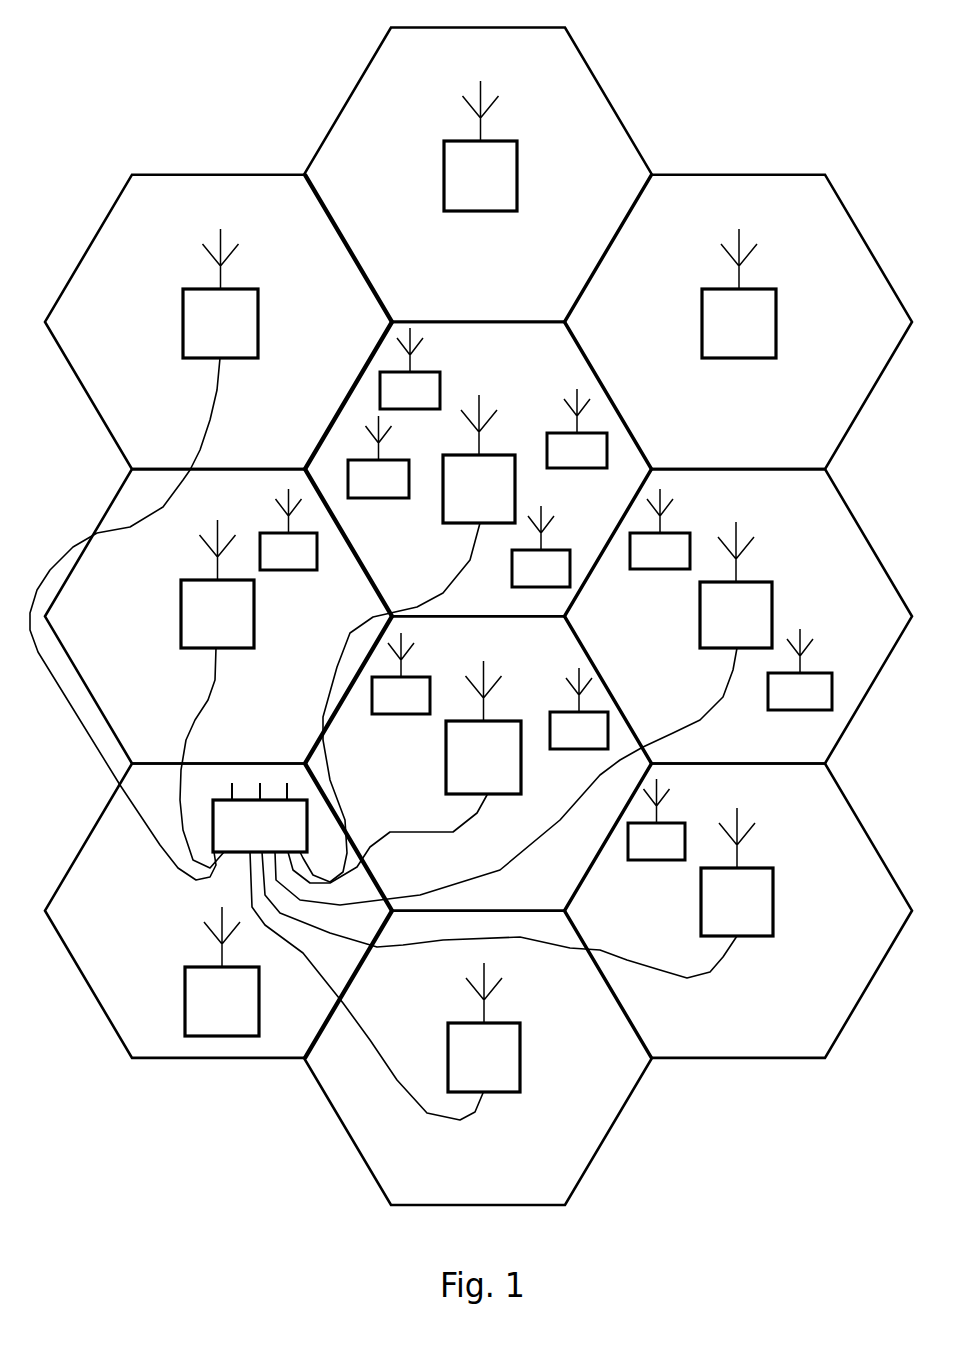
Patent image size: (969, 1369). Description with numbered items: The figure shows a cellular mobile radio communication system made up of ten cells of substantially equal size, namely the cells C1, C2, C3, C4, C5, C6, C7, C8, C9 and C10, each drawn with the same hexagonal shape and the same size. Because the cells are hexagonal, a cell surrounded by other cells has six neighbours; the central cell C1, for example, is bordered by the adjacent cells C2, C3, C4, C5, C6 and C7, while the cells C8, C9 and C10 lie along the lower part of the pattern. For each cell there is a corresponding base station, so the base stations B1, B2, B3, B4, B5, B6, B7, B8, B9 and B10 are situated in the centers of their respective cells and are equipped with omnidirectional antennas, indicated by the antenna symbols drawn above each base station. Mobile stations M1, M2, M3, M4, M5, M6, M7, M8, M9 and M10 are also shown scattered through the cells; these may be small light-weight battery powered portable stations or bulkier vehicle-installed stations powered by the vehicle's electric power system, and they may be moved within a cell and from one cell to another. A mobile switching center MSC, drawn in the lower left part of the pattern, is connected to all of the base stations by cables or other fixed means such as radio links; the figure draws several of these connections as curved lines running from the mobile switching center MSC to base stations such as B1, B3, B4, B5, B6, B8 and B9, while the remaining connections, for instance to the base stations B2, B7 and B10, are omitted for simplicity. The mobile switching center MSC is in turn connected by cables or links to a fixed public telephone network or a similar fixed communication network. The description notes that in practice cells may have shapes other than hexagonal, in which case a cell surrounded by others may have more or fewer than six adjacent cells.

The cell C1 is at (428, 585).
The cell C2 is at (699, 448).
The cell C3 is at (687, 727).
The cell C4 is at (444, 890).
The cell C5 is at (177, 735).
The cell C6 is at (178, 448).
The cell C7 is at (441, 302).
The cell C8 is at (700, 1035).
The cell C9 is at (444, 1182).
The cell C10 is at (162, 999).
The base station B1 is at (479, 459).
The base station B2 is at (739, 293).
The base station B3 is at (736, 585).
The base station B4 is at (483, 727).
The base station B5 is at (217, 584).
The base station B6 is at (220, 293).
The base station B7 is at (480, 146).
The base station B8 is at (737, 872).
The base station B9 is at (484, 1027).
The base station B10 is at (222, 971).
The mobile station M1 is at (656, 819).
The mobile station M2 is at (288, 529).
The mobile station M3 is at (378, 457).
The mobile station M4 is at (577, 428).
The mobile station M5 is at (660, 529).
The mobile station M6 is at (410, 368).
The mobile station M7 is at (541, 546).
The mobile station M8 is at (579, 708).
The mobile station M9 is at (401, 673).
The mobile station M10 is at (800, 669).
The mobile switching center MSC is at (260, 817).